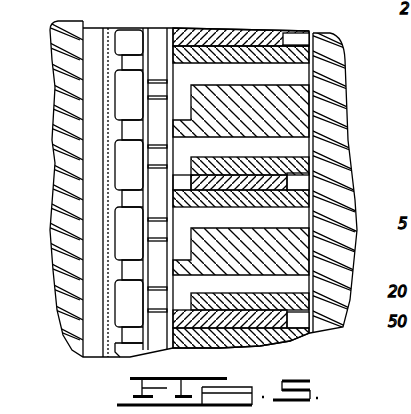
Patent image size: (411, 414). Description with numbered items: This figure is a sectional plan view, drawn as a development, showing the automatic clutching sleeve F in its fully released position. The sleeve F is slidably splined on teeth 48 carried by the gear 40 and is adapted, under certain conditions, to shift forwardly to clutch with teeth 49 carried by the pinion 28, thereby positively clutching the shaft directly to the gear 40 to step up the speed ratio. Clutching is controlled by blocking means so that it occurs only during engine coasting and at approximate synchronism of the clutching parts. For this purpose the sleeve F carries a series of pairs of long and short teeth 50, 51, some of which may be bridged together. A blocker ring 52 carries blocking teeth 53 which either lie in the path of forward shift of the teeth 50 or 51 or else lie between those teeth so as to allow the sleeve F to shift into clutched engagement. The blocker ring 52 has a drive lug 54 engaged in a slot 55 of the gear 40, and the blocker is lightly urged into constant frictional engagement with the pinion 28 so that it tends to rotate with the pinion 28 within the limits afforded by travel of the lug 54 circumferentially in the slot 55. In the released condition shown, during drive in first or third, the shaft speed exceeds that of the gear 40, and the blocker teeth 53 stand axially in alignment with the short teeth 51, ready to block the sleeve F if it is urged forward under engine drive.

The pinion 28 is at (57, 183).
The gear 40 is at (332, 160).
The teeth 48 is at (267, 43).
The teeth 49 is at (127, 62).
The long teeth 50 is at (194, 118).
The short teeth 51 is at (191, 88).
The blocker ring 52 is at (160, 28).
The blocking teeth 53 is at (160, 90).
The drive lug 54 is at (207, 175).
The slot 55 is at (192, 138).
The automatic clutching sleeve F is at (297, 107).